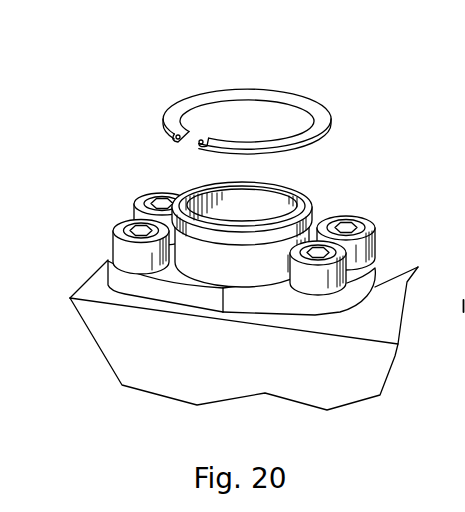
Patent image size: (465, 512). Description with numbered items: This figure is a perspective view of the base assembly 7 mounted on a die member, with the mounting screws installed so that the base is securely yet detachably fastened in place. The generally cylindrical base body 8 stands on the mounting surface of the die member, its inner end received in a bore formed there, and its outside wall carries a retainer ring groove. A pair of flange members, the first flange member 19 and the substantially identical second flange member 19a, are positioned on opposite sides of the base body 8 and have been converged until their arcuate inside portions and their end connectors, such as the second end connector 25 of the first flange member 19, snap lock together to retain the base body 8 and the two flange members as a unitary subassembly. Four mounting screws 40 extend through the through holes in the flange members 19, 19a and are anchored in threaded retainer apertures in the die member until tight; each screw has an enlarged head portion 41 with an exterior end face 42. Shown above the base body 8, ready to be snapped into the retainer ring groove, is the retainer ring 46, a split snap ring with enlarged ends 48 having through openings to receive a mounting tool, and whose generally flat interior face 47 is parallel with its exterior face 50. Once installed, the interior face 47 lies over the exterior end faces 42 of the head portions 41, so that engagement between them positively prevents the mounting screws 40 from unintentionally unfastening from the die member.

The base assembly 7 is at (246, 228).
The base body 8 is at (223, 345).
The first flange member 19 is at (246, 323).
The second flange member 19a is at (380, 278).
The second end connector 25 is at (213, 300).
The mounting screw 40 is at (236, 218).
The enlarged head portion 41 is at (118, 250).
The exterior end face 42 is at (130, 222).
The retainer ring 46 is at (217, 98).
The interior face 47 is at (304, 146).
The ring lug 48 is at (168, 133).
The exterior face 50 is at (312, 110).